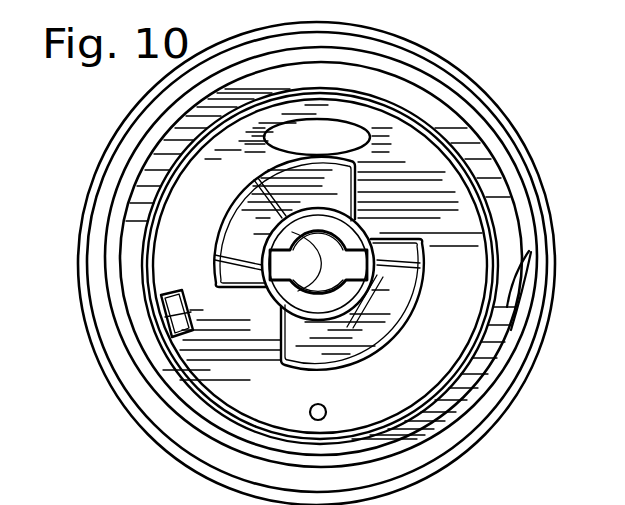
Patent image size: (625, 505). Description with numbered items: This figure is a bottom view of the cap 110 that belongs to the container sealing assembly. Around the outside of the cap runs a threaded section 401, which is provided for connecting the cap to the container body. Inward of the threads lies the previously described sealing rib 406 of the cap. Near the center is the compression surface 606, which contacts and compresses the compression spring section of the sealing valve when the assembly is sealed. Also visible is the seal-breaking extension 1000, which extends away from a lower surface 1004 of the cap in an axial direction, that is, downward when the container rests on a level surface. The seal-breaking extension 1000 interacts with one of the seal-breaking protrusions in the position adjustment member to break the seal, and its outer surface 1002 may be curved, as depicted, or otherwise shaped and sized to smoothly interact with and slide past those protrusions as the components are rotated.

The cap 110 is at (503, 85).
The threaded section 401 is at (320, 53).
The sealing rib 406 is at (158, 213).
The compression surface 606 is at (318, 298).
The seal-breaking extension 1000 is at (103, 322).
The outer surface 1002 is at (176, 306).
The lower surface 1004 is at (393, 405).